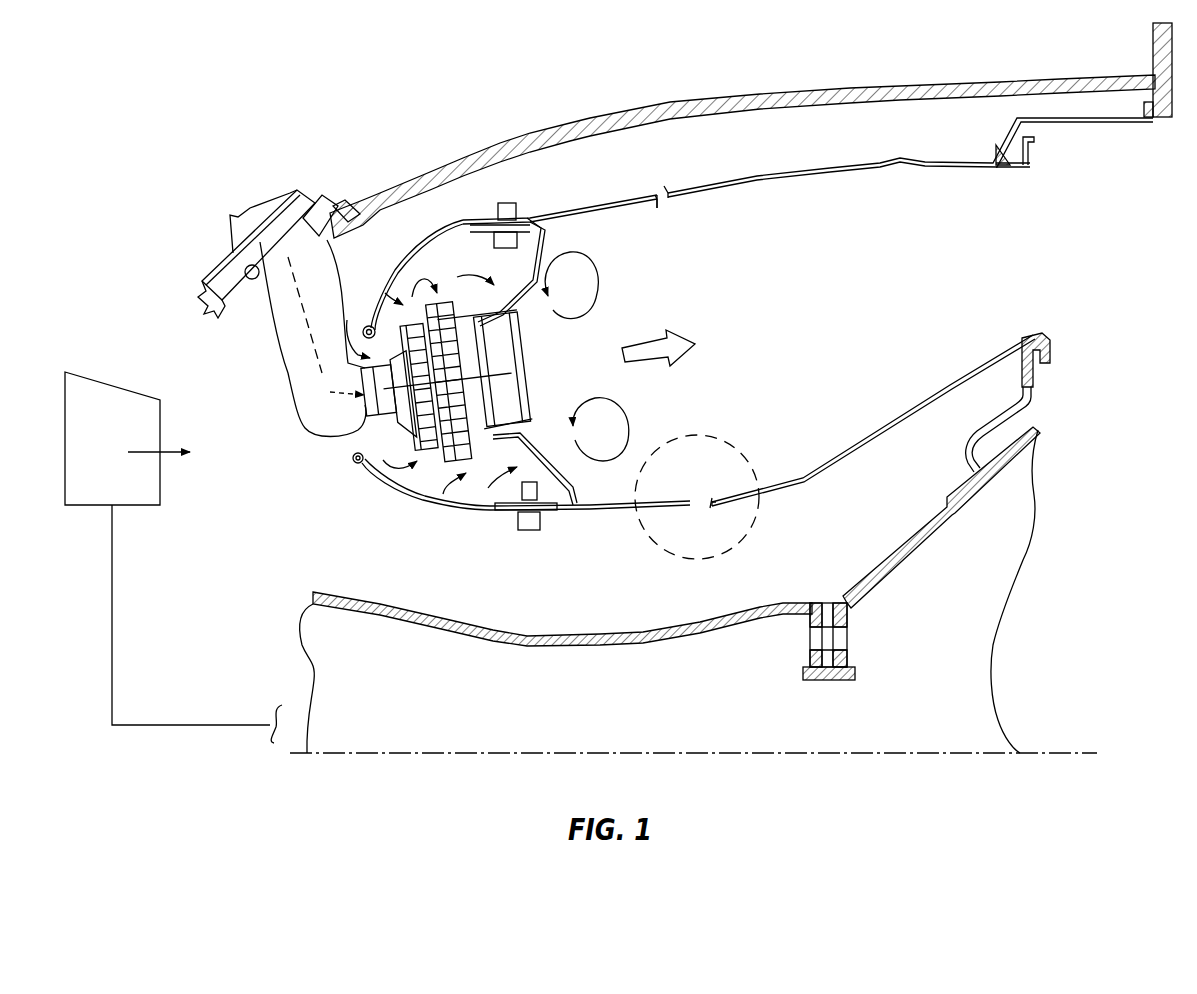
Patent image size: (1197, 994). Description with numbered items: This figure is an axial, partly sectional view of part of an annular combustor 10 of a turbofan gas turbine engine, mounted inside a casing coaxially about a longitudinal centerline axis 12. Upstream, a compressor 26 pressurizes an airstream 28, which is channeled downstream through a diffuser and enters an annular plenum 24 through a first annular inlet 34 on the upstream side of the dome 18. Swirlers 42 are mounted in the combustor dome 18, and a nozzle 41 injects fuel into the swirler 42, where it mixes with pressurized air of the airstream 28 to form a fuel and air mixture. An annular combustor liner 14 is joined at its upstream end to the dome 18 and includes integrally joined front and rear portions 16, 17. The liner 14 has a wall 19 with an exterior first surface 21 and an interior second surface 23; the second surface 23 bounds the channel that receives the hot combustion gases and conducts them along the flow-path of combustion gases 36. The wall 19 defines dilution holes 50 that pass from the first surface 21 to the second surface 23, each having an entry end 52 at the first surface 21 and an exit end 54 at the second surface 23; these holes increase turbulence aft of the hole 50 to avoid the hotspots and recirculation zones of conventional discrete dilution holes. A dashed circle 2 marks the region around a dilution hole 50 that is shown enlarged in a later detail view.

The detail view circle 2 is at (757, 518).
The annular combustor 10 is at (774, 127).
The longitudinal centerline axis 12 is at (823, 753).
The annular combustor liner 14 is at (690, 193).
The front portion 16 is at (592, 208).
The rear portion 17 is at (812, 167).
The combustor dome 18 is at (422, 250).
The wall 19 is at (830, 464).
The exterior first surface 21 is at (738, 176).
The interior second surface 23 is at (848, 174).
The annular plenum 24 is at (465, 268).
The compressor 26 is at (90, 486).
The airstream 28 is at (139, 451).
The first annular inlet 34 is at (347, 320).
The flow-path of combustion gases 36 is at (643, 364).
The nozzle 41 is at (365, 367).
The swirler 42 is at (428, 470).
The dilution hole 50 is at (648, 182).
The entry end 52 is at (671, 188).
The exit end 54 is at (656, 199).